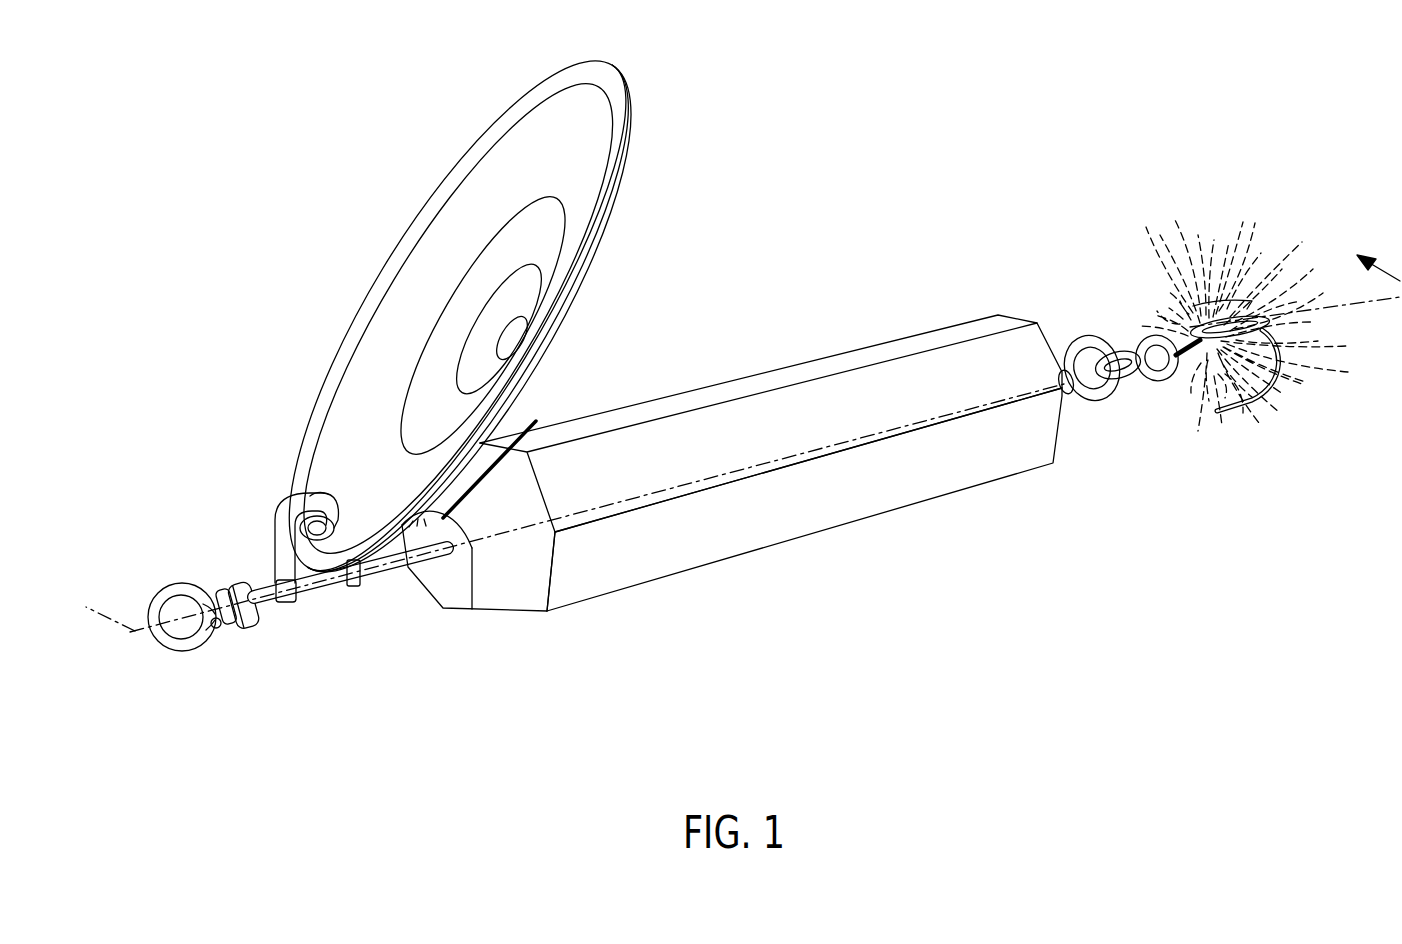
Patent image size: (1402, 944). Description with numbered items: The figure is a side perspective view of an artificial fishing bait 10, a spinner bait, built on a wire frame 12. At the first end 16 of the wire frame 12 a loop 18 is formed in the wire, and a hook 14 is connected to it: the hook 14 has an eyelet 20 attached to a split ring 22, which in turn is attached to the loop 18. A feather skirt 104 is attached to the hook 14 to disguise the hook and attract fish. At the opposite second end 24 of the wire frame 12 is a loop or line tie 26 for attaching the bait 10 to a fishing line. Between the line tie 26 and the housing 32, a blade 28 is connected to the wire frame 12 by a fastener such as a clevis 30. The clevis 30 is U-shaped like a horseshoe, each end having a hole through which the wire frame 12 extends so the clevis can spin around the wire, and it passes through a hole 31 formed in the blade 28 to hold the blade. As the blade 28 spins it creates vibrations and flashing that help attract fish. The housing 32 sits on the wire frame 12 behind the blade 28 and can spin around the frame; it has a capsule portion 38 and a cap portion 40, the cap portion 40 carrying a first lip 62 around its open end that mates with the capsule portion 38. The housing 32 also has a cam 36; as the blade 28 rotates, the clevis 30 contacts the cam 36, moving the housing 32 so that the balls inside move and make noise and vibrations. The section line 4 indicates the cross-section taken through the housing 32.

The section line 4- 4 is at (724, 430).
The artificial fishing bait 10 is at (805, 200).
The wire frame 12 is at (378, 572).
The hook 14 is at (1253, 398).
The first end 16 is at (1119, 354).
The loop 18 is at (1095, 337).
The eyelet 20 is at (1152, 336).
The split ring 22 is at (1127, 354).
The second end 24 is at (182, 663).
The line tie 26 is at (165, 598).
The blade 28 is at (556, 250).
The clevis 30 is at (295, 509).
The hole 31 is at (312, 485).
The housing 32 is at (732, 515).
The cam 36 is at (526, 440).
The capsule portion 38 is at (900, 497).
The cap portion 40 is at (505, 600).
The first lip 62 is at (557, 592).
The feather skirt 104 is at (1220, 417).